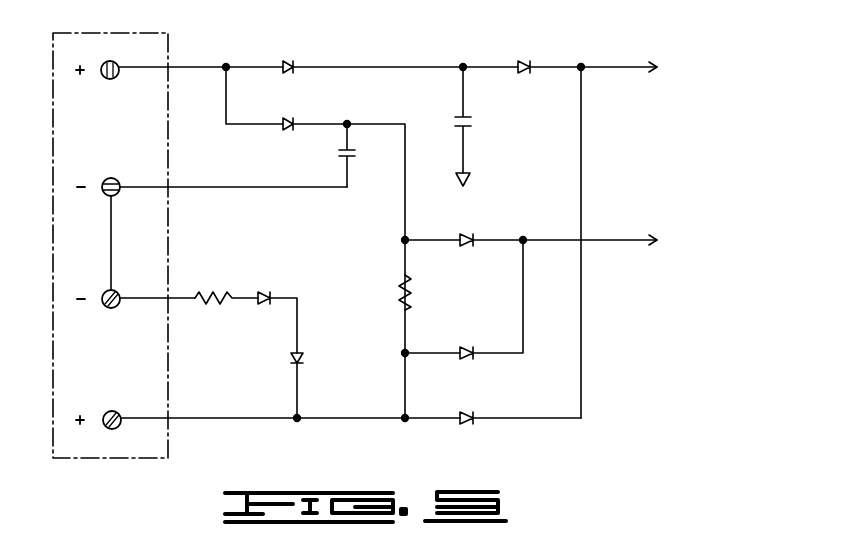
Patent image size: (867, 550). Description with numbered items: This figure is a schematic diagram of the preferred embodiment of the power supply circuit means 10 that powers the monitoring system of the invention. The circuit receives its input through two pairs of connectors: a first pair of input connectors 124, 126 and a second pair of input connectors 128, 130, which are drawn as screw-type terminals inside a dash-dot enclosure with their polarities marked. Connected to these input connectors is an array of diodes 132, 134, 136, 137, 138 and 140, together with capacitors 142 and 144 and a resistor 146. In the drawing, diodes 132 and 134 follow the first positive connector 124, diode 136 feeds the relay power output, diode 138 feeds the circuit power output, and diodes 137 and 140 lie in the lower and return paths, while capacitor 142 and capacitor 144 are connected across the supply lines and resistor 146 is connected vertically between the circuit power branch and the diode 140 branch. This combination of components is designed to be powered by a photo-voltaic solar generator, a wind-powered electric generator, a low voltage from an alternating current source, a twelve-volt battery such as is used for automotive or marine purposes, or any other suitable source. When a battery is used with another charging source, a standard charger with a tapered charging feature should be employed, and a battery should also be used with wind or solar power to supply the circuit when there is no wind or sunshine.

The power supply circuit means 10 is at (527, 40).
The input connector 124 is at (108, 79).
The input connector 126 is at (113, 197).
The input connector 128 is at (113, 309).
The input connector 130 is at (114, 430).
The diode 132 is at (289, 60).
The diode 134 is at (289, 117).
The diode 136 is at (527, 60).
The diode 137 is at (466, 426).
The diode 138 is at (466, 233).
The diode 140 is at (463, 346).
The capacitor 142 is at (345, 158).
The capacitor 144 is at (460, 114).
The resistor 146 is at (400, 304).